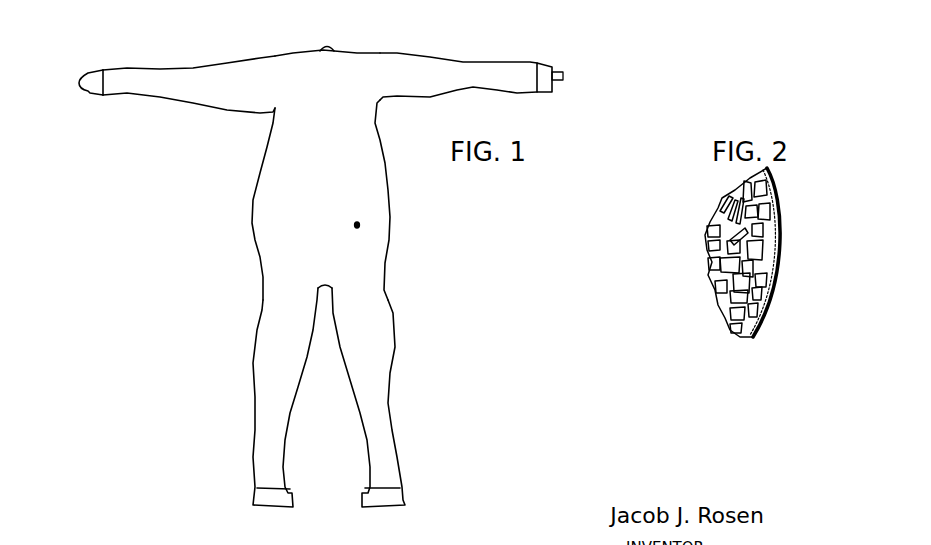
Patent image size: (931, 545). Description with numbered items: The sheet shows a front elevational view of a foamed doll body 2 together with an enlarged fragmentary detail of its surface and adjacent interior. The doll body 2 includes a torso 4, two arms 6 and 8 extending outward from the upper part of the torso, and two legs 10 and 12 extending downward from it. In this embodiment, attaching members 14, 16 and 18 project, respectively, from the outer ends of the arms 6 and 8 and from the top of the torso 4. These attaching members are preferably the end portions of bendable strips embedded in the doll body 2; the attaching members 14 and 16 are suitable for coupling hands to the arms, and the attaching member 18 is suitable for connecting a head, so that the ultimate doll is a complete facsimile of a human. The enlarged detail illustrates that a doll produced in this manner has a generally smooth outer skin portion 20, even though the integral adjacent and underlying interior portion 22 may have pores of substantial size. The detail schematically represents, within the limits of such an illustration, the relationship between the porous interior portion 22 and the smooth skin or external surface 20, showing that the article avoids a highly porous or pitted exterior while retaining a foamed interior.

In FIG. 1, the doll body 2 is at (243, 241).
In FIG. 1, the torso 4 is at (311, 151).
In FIG. 1, the arm 6 is at (214, 98).
In FIG. 1, the arm 8 is at (391, 98).
In FIG. 1, the leg 10 is at (290, 339).
In FIG. 1, the leg 12 is at (380, 339).
In FIG. 1, the attaching member 14 is at (82, 74).
In FIG. 1, the attaching member 16 is at (563, 75).
In FIG. 1, the attaching member 18 is at (321, 48).
In FIG. 2, the outer skin portion 20 is at (771, 290).
In FIG. 2, the interior portion 22 is at (711, 278).